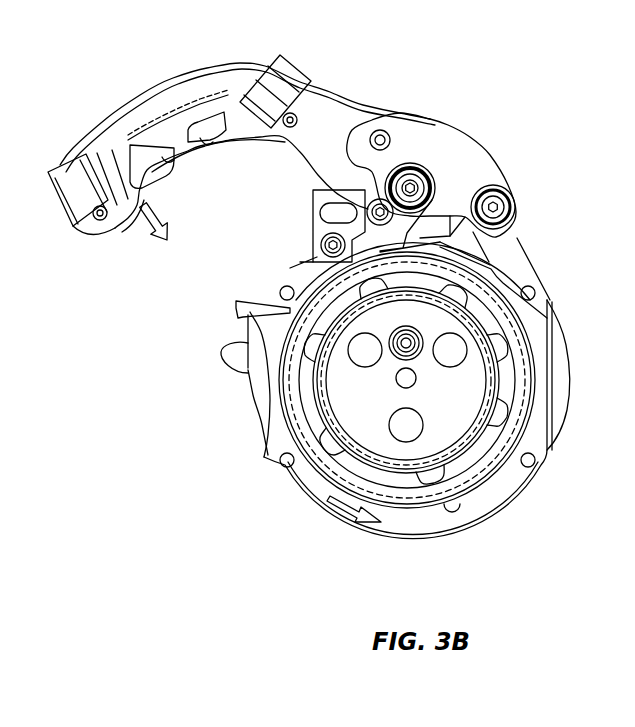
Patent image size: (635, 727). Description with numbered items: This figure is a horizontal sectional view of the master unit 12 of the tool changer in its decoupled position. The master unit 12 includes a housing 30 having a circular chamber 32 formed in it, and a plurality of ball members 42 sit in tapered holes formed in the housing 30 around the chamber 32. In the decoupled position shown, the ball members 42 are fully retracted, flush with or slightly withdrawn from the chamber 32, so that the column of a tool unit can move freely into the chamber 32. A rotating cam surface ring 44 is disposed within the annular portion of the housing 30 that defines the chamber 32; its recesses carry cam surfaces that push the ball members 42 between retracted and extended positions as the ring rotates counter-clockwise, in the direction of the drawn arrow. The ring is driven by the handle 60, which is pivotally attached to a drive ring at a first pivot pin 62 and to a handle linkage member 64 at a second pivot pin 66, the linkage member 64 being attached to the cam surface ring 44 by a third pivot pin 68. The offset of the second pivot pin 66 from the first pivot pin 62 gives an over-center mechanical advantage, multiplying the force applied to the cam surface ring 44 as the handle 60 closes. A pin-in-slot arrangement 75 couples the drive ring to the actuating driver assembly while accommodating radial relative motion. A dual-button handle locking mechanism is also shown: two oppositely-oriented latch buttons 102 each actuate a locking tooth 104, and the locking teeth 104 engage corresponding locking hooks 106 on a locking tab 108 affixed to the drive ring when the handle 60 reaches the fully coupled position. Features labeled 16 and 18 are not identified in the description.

The master unit 12 is at (214, 458).
The hub bolt 16 is at (398, 356).
The drive hole 18 is at (416, 436).
The housing 30 is at (543, 287).
The circular chamber 32 is at (392, 402).
The ball member 42 is at (511, 378).
The rotating cam surface ring 44 is at (507, 329).
The handle 60 is at (128, 110).
The first pivot pin 62 is at (413, 188).
The handle linkage member 64 is at (455, 158).
The second pivot pin 66 is at (383, 135).
The third pivot pin 68 is at (495, 207).
The pin-in-slot arrangement 75 is at (375, 210).
The latch button 102 is at (307, 73).
The locking tooth 104 is at (168, 163).
The locking hook 106 is at (228, 352).
The locking tab 108 is at (247, 372).